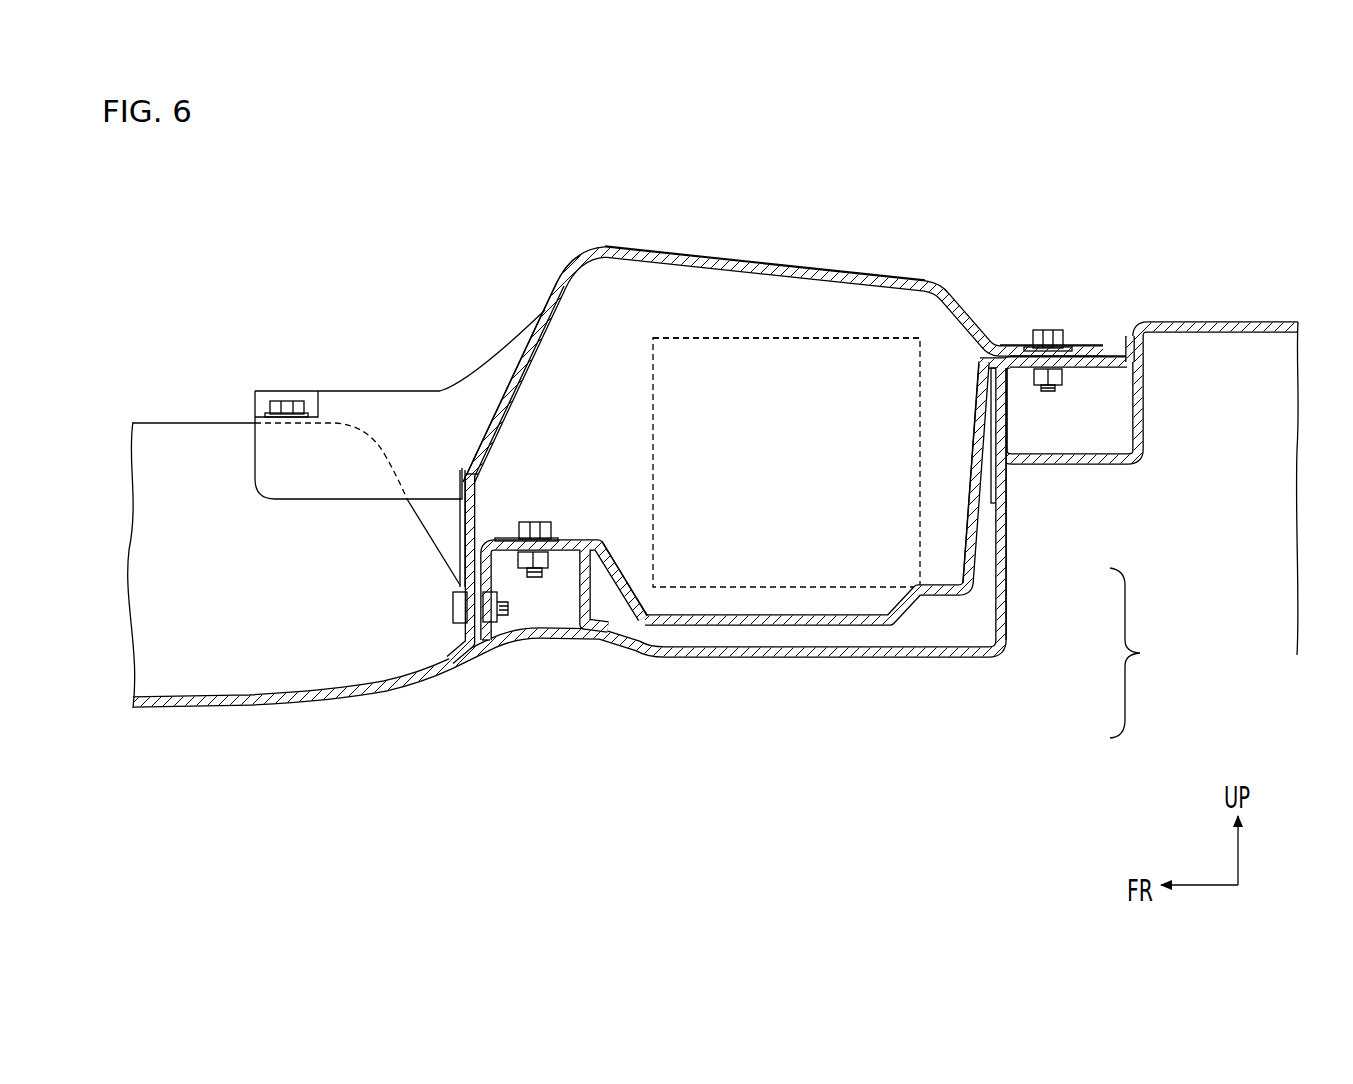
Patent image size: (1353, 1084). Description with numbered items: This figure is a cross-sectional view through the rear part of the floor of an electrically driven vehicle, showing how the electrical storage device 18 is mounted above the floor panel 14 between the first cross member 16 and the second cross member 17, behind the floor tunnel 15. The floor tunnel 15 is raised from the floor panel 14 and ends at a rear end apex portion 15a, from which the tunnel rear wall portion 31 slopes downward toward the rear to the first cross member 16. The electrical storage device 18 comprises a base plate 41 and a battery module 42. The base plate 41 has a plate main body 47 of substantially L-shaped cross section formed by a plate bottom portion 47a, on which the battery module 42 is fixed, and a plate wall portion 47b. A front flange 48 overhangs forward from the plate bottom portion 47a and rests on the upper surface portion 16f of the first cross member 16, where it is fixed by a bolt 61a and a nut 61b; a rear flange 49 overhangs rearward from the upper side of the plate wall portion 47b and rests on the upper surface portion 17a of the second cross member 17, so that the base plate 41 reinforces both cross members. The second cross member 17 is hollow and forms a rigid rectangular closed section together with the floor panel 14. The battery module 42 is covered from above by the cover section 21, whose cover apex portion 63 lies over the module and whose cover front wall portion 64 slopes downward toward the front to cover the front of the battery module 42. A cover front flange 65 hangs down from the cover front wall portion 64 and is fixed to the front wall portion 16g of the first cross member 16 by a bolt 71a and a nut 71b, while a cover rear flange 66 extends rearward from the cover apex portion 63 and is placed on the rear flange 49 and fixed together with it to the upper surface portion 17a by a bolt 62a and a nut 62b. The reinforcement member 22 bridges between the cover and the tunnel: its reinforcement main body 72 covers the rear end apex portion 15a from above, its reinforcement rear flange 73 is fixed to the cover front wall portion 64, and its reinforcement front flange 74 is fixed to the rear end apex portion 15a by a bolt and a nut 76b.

The floor panel 14 is at (838, 643).
The floor tunnel 15 is at (186, 418).
The rear end apex portion 15a is at (276, 390).
The first cross member 16 is at (592, 570).
The upper surface portion 16f is at (570, 538).
The front wall portion 16g is at (496, 600).
The second cross member 17 is at (1109, 343).
The upper surface portion 17a is at (1085, 350).
The electrical storage device 18 is at (863, 315).
The cover section 21 is at (780, 262).
The reinforcement member 22 is at (381, 389).
The tunnel rear wall portion 31 is at (436, 512).
The base plate 41 is at (728, 626).
The battery module 42 is at (807, 336).
The plate main body 47 is at (1140, 653).
The plate bottom portion 47a is at (870, 630).
The plate wall portion 47b is at (975, 545).
The front flange 48 is at (474, 470).
The rear flange 49 is at (1048, 328).
The bolt 61a is at (533, 521).
The nut 61b is at (545, 563).
The bolt 62a is at (1036, 346).
The nut 62b is at (1072, 374).
The cover apex portion 63 is at (680, 254).
The cover front wall portion 64 is at (513, 377).
The cover front flange 65 is at (462, 587).
The cover rear flange 66 is at (1092, 352).
The bolt 71a is at (455, 607).
The nut 71b is at (490, 624).
The reinforcement main body 72 is at (523, 318).
The reinforcement rear flange 73 is at (562, 280).
The reinforcement front flange 74 is at (278, 400).
The nut 76b is at (300, 400).